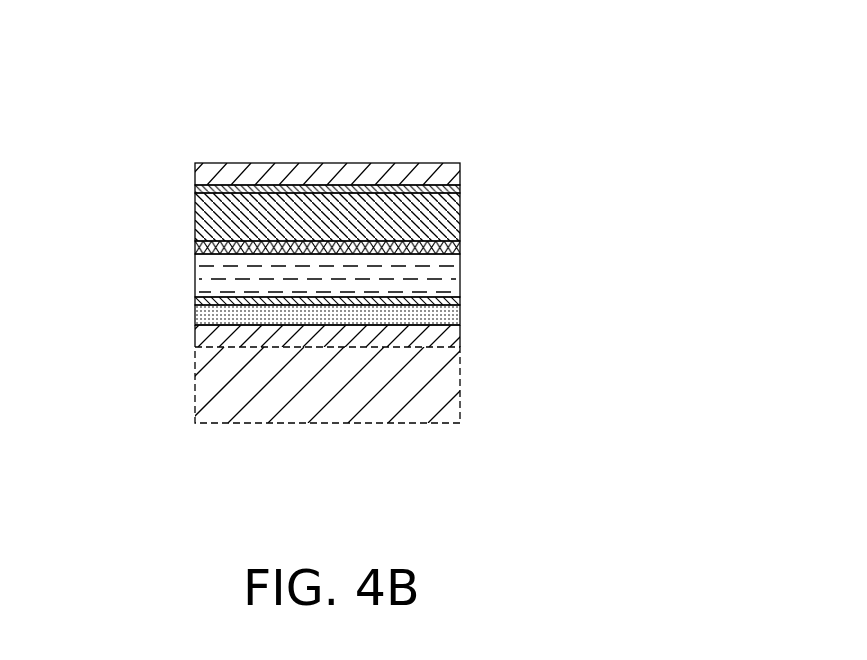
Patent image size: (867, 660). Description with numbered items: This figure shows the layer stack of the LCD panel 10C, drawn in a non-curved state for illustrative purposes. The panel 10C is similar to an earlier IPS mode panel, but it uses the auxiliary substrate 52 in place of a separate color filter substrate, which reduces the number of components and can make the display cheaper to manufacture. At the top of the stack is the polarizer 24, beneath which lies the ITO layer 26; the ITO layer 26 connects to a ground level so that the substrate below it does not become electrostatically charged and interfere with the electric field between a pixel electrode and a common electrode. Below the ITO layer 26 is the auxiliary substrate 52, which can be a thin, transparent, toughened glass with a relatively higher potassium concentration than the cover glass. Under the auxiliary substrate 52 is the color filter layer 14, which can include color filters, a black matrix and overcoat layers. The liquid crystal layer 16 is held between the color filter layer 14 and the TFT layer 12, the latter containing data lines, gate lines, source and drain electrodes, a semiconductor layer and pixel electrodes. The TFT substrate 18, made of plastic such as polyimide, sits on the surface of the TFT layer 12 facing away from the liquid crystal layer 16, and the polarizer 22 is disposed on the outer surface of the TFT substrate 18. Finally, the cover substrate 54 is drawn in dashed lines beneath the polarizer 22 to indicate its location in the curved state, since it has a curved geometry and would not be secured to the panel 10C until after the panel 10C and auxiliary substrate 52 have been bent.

The LCD panel 10C is at (627, 80).
The polarizer 24 is at (293, 163).
The ITO layer 26 is at (195, 187).
The auxiliary substrate 52 is at (460, 227).
The color filter layer 14 is at (460, 246).
The liquid crystal layer 16 is at (460, 273).
The TFT layer 12 is at (460, 303).
The TFT substrate 18 is at (460, 317).
The polarizer 22 is at (195, 335).
The cover substrate 54 is at (460, 377).